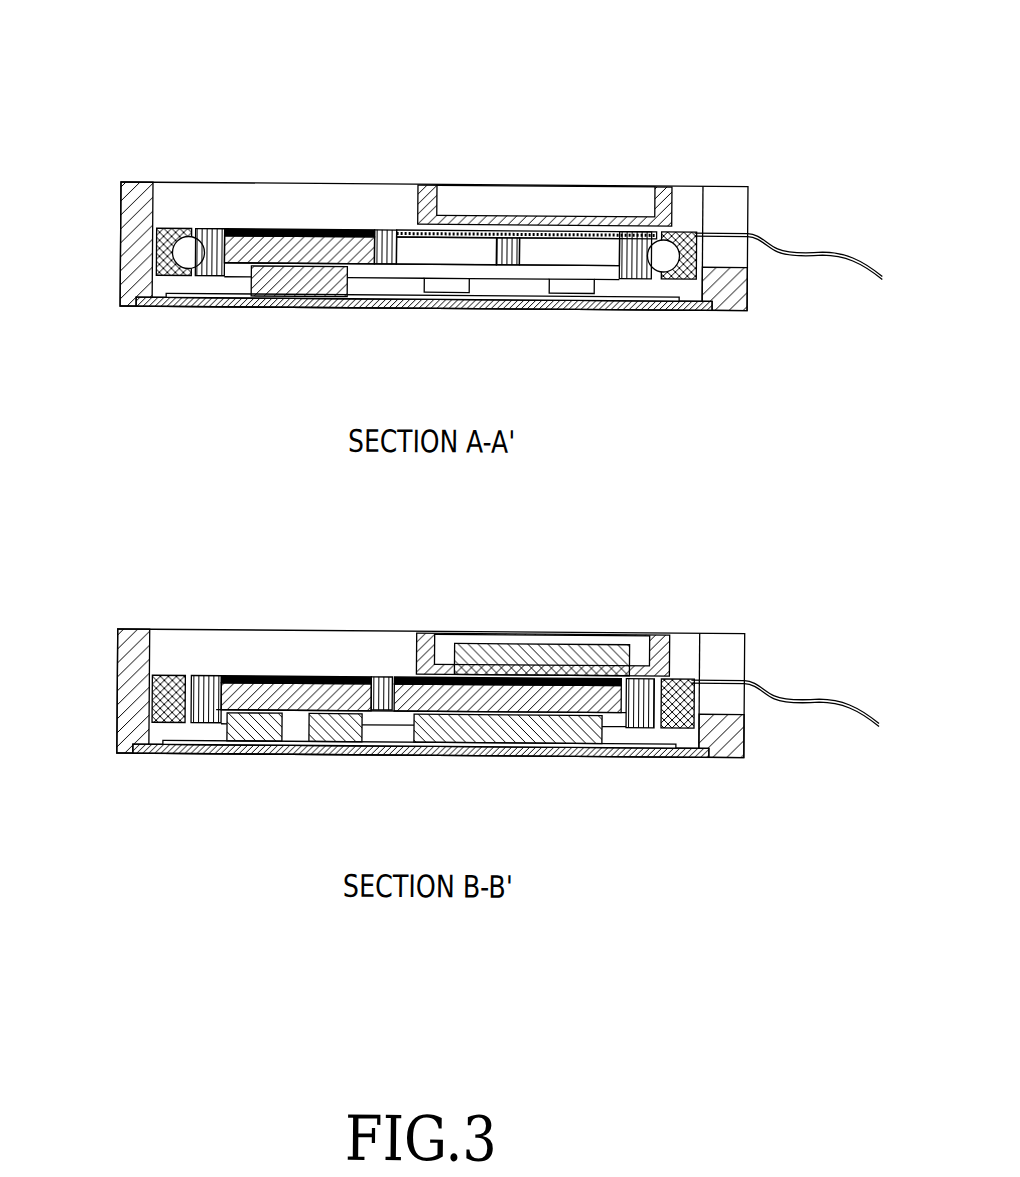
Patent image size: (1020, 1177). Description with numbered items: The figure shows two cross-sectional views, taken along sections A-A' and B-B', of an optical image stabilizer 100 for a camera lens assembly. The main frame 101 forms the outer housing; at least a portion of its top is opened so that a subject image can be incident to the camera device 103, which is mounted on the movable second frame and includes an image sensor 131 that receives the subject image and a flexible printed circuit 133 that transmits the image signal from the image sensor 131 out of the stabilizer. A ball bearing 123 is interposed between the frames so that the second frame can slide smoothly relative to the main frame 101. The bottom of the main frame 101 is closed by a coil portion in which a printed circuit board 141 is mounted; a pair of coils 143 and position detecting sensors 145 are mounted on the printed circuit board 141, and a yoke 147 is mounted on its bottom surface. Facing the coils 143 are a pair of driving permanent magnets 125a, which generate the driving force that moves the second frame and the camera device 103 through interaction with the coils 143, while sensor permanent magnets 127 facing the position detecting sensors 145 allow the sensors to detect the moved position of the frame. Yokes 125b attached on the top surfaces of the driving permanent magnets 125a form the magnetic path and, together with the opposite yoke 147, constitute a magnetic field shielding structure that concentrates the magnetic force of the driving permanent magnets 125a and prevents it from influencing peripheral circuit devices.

The optical image stabilizer 100 is at (717, 33).
The main frame 101 is at (130, 217).
The camera device 103 is at (528, 182).
The ball bearing 123 is at (183, 257).
The driving permanent magnet 125a is at (239, 228).
The yoke 125b is at (318, 250).
The sensor permanent magnet 127 is at (404, 238).
The image sensor 131 is at (612, 641).
The flexible printed circuit 133 is at (793, 245).
The printed circuit board 141 is at (178, 306).
The coil 143 is at (297, 292).
The position detecting sensor 145 is at (449, 290).
The yoke 147 is at (205, 306).